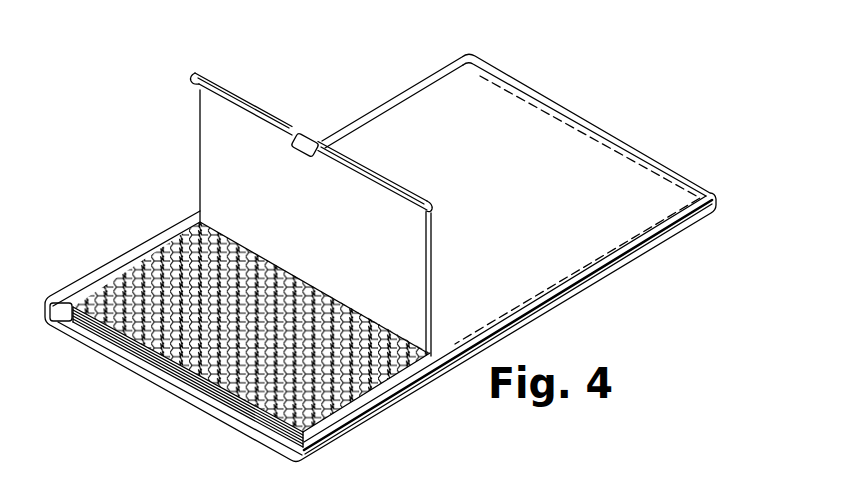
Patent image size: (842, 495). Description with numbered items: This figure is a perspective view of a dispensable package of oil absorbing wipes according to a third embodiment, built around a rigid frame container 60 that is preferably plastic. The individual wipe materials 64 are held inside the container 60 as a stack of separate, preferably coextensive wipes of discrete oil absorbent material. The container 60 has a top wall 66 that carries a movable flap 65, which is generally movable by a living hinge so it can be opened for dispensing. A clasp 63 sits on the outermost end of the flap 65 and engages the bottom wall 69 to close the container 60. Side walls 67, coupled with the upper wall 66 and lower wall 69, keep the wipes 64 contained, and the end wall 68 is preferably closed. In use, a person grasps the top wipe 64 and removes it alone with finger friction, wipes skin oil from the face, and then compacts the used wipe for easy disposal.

The rigid frame container 60 is at (712, 190).
The clasp 63 is at (307, 144).
The wipe materials 64 is at (127, 278).
The movable flap 65 is at (243, 97).
The top wall 66 is at (615, 163).
The side walls 67 is at (417, 86).
The end wall 68 is at (571, 111).
The bottom wall 69 is at (115, 359).